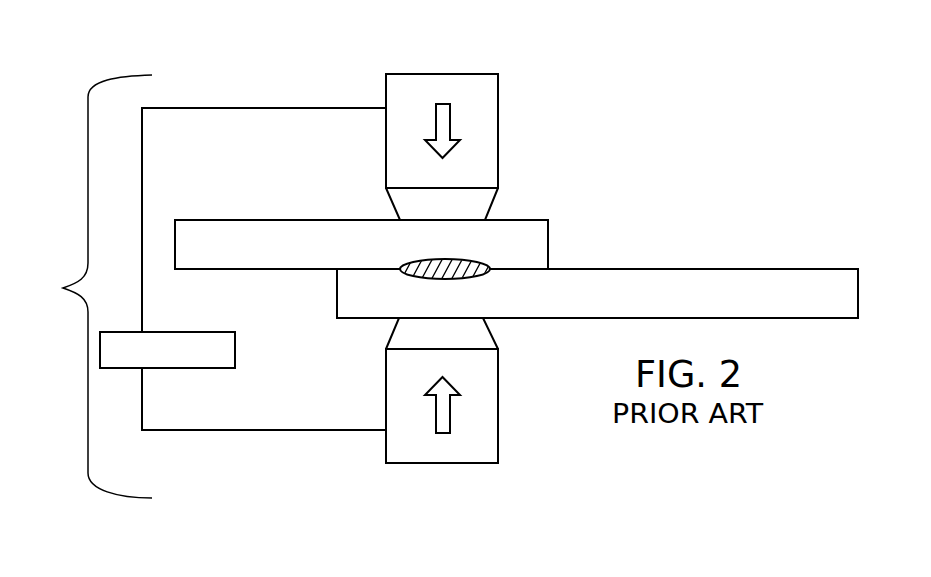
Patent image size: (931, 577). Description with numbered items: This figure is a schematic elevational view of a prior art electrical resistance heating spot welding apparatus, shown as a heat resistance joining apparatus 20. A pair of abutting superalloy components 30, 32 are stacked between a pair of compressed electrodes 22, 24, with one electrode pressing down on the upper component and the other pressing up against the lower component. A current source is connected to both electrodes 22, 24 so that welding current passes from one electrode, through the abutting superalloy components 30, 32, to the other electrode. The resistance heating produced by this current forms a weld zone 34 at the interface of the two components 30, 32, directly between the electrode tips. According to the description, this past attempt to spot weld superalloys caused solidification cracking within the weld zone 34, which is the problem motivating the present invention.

The heat resistance joining apparatus 20 is at (63, 288).
The electrode 22 is at (485, 93).
The electrode 24 is at (462, 448).
The superalloy component 30 is at (257, 240).
The superalloy component 32 is at (357, 305).
The weld zone 34 is at (470, 263).